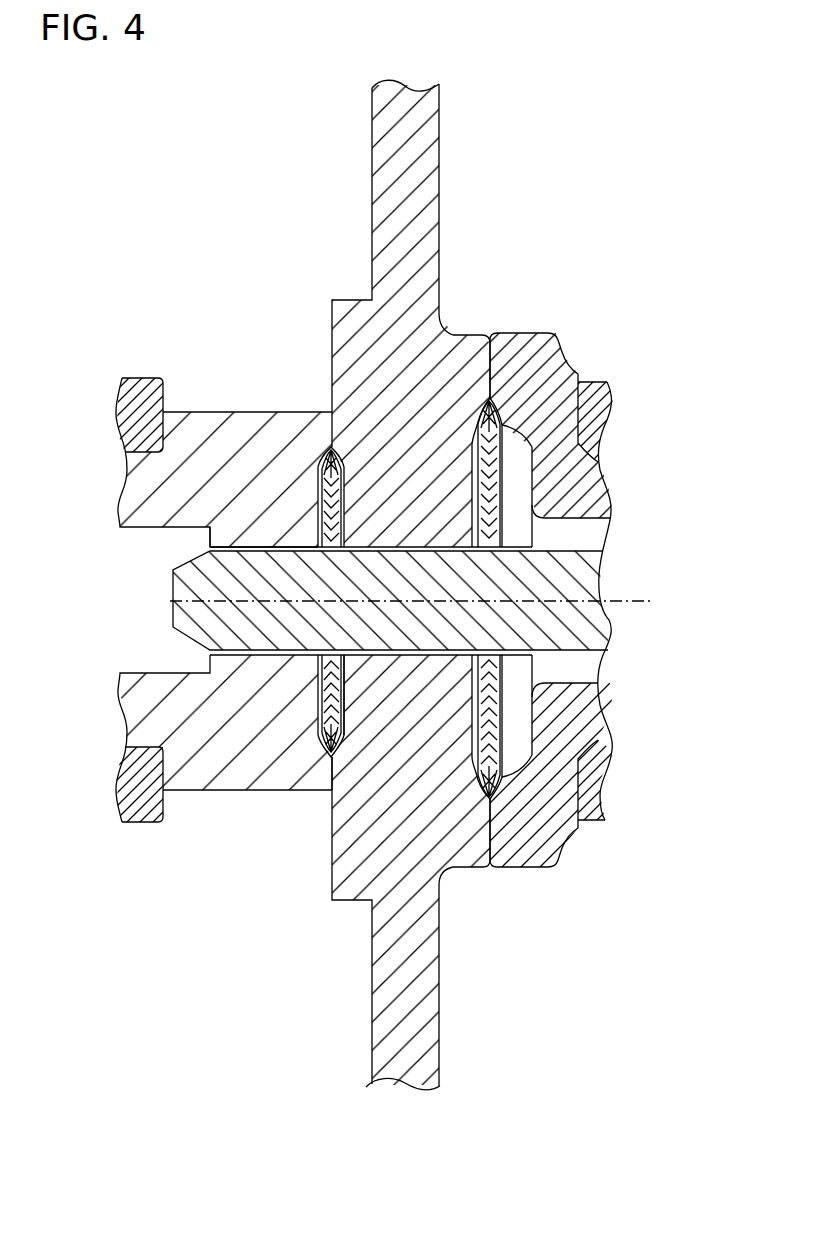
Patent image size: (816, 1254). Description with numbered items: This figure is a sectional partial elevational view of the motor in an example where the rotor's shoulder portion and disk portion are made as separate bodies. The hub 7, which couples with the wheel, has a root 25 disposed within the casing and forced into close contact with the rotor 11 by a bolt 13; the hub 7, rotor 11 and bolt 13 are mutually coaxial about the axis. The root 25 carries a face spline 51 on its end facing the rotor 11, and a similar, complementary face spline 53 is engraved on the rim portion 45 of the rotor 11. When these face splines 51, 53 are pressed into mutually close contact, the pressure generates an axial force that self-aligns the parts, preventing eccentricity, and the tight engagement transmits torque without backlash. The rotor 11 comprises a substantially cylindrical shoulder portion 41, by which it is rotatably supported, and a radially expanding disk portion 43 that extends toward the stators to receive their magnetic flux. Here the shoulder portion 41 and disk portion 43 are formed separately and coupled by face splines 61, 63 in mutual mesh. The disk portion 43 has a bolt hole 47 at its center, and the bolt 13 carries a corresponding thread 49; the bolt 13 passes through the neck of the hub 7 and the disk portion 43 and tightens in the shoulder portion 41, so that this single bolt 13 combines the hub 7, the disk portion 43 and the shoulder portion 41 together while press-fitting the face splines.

The hub 7 is at (589, 349).
The rotor 11 is at (251, 340).
The bolt 13 is at (602, 575).
The root 25 is at (520, 333).
The shoulder portion 41 is at (230, 792).
The disk portion 43 is at (383, 198).
The rim portion 45 is at (455, 334).
The bolt hole 47 is at (256, 530).
The thread 49 is at (208, 527).
The face spline 51 is at (480, 867).
The face spline 53 is at (496, 830).
The face spline 61 is at (320, 777).
The face spline 63 is at (330, 826).